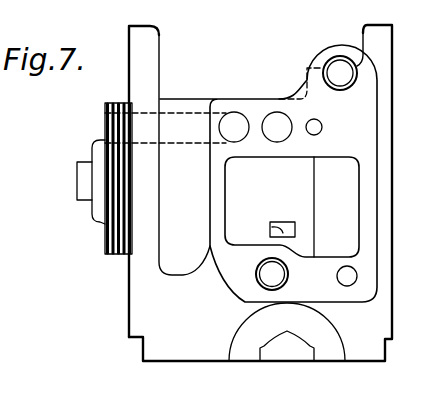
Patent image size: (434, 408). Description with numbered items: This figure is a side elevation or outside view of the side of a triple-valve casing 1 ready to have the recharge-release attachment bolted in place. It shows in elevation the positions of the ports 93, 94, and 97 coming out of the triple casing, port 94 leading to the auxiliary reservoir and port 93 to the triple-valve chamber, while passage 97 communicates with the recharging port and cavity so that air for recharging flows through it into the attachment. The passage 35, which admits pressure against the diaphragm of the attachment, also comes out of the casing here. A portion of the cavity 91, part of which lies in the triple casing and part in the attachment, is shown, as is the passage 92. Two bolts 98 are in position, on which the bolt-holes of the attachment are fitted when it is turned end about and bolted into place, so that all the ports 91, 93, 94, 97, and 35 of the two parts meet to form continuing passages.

The frame body 1 is at (181, 100).
The cavity 91 is at (292, 207).
The passage 92 is at (270, 229).
The passage 93 is at (277, 127).
The passage 94 is at (234, 127).
The passage 97 is at (314, 127).
The bolts 98 is at (341, 73).
The passage 35 is at (346, 277).